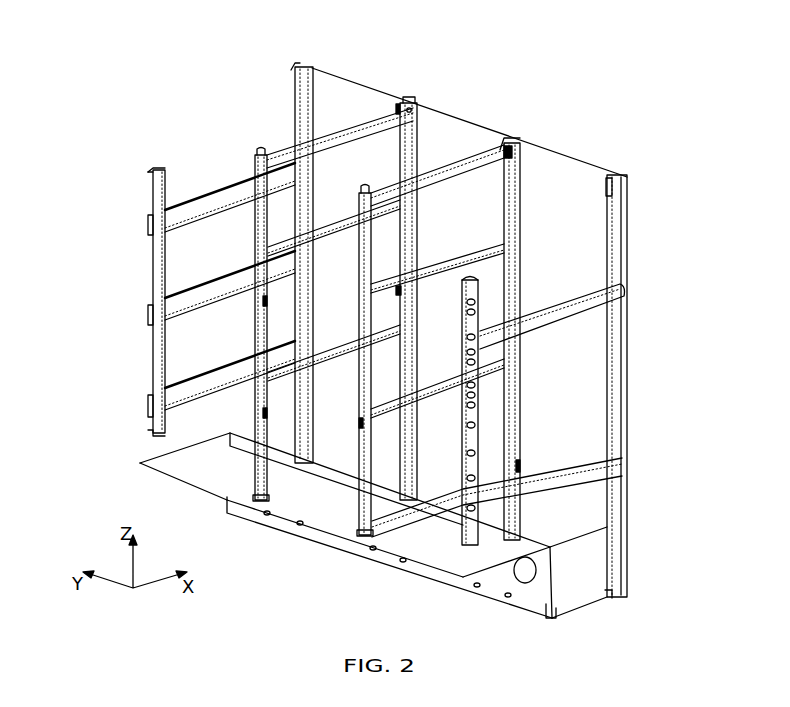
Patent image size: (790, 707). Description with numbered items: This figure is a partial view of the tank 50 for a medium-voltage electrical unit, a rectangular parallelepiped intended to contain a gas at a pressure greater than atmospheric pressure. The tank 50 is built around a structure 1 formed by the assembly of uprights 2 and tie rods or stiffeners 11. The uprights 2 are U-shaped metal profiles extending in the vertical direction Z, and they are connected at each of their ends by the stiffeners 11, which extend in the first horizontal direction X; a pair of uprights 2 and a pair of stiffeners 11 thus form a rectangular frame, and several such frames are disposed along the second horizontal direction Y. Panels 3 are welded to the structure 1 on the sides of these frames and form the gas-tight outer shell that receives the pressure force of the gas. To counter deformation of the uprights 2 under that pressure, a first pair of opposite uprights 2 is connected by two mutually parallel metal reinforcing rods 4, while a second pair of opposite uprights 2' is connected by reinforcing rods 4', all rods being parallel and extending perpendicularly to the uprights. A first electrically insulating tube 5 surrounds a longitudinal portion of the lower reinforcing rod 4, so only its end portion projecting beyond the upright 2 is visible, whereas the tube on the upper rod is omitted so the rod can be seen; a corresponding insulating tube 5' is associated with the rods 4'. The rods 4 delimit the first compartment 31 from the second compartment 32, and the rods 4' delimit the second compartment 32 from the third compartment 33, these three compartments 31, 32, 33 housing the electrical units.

The tank 50 is at (517, 87).
The structure 1 is at (204, 417).
The uprights 2 is at (331, 280).
The second pair of opposite uprights 2' is at (446, 344).
The panels 3 is at (585, 390).
The reinforcing rod 4 is at (330, 371).
The reinforcing rods 4' is at (437, 242).
The first electrically insulating tube 5 is at (334, 332).
The first insulating tube 5' is at (437, 411).
The tie rods 11 is at (284, 148).
The first compartment 31 is at (204, 472).
The second compartment 32 is at (332, 512).
The third compartment 33 is at (422, 547).